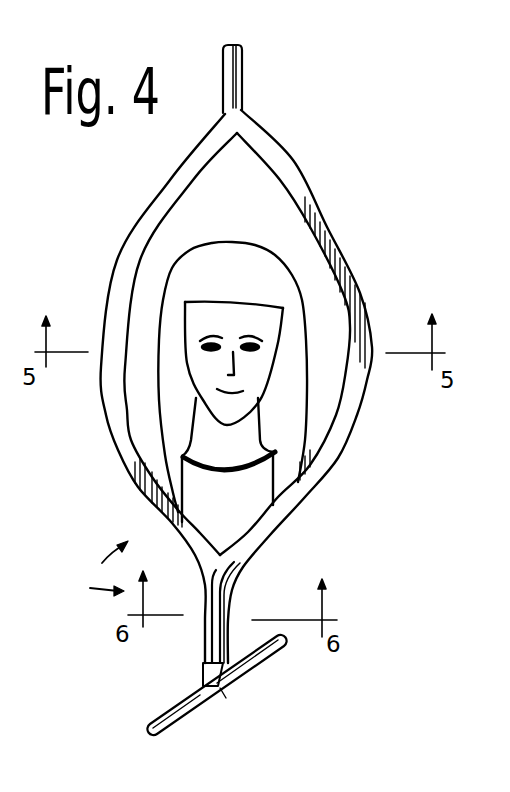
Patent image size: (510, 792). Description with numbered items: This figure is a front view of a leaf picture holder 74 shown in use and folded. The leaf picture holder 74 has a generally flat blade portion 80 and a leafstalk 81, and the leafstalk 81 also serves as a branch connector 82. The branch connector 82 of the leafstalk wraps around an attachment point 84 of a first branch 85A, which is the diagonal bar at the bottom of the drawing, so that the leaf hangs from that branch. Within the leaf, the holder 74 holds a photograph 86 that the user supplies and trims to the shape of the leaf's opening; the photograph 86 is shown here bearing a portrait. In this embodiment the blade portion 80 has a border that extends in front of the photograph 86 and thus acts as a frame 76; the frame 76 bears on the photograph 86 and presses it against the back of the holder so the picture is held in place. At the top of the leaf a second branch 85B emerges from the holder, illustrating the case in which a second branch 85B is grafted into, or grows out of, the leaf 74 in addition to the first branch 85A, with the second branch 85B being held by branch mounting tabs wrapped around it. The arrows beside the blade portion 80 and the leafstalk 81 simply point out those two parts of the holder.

The leaf picture holder 74 is at (103, 239).
The frame 76 is at (313, 482).
The blade portion 80 is at (100, 559).
The leafstalk 81 is at (93, 590).
The branch connector 82 is at (202, 657).
The attachment point 84 is at (200, 676).
The first branch 85A is at (207, 717).
The second branch 85B is at (244, 73).
The photograph 86 is at (257, 188).